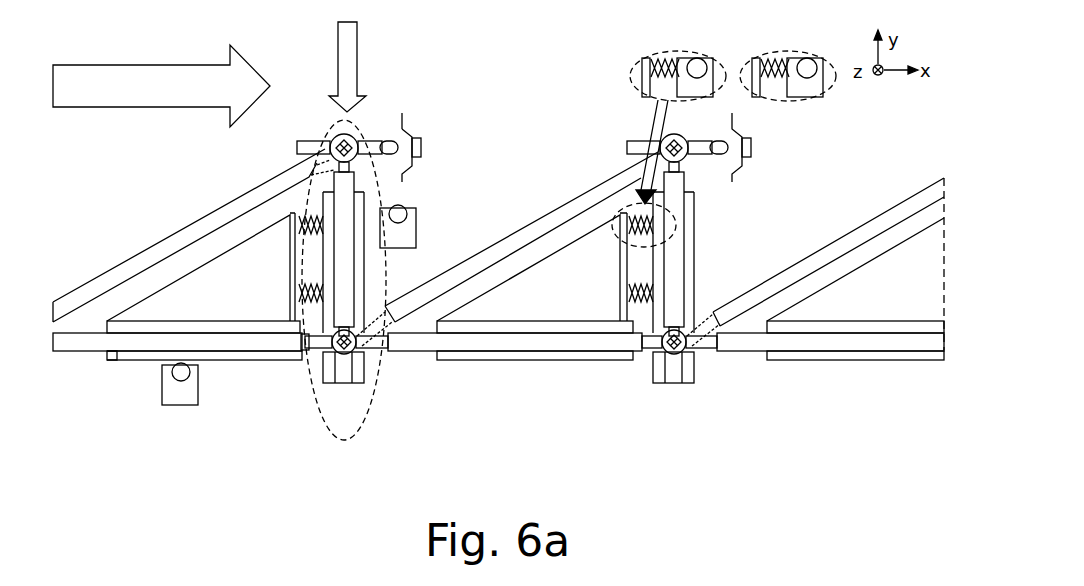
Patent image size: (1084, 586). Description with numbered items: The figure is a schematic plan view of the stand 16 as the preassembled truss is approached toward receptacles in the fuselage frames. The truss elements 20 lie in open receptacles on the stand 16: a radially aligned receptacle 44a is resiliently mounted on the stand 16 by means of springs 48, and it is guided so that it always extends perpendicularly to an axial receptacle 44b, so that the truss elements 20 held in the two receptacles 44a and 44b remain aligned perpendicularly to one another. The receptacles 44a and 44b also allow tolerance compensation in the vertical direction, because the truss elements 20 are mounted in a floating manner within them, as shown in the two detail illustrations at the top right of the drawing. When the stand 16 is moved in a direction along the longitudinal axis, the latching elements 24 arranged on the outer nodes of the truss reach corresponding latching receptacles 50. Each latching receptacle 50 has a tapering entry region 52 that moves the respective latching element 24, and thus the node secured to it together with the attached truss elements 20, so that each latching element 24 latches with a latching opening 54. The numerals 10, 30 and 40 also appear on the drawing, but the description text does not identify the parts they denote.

The support structure 10 is at (605, 297).
The photovoltaic panel 16 is at (127, 307).
The fastening spring element 20 is at (692, 58).
The upper pivot joint 24 is at (361, 137).
The lower pivot joint assembly 30 is at (337, 440).
The telescopic strut 40 is at (370, 198).
The upper bracket 44a is at (344, 275).
The lower bracket 44b is at (112, 360).
The lower tube 48 is at (305, 343).
The clip 50 is at (426, 131).
The clip upper leg 52 is at (413, 120).
The clip engagement block 54 is at (427, 146).